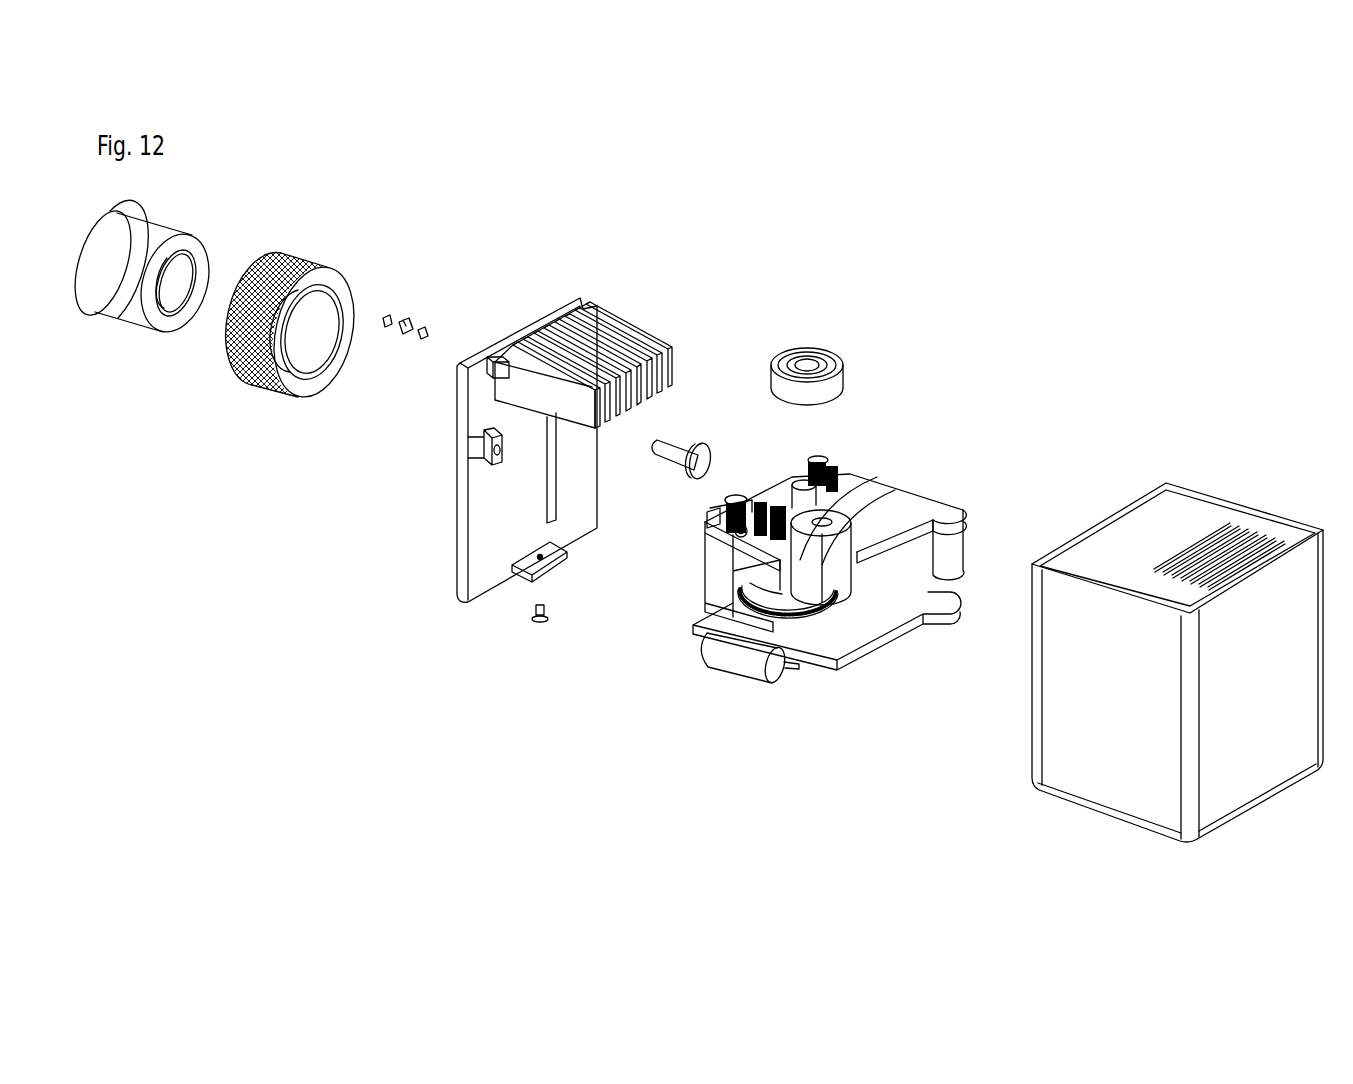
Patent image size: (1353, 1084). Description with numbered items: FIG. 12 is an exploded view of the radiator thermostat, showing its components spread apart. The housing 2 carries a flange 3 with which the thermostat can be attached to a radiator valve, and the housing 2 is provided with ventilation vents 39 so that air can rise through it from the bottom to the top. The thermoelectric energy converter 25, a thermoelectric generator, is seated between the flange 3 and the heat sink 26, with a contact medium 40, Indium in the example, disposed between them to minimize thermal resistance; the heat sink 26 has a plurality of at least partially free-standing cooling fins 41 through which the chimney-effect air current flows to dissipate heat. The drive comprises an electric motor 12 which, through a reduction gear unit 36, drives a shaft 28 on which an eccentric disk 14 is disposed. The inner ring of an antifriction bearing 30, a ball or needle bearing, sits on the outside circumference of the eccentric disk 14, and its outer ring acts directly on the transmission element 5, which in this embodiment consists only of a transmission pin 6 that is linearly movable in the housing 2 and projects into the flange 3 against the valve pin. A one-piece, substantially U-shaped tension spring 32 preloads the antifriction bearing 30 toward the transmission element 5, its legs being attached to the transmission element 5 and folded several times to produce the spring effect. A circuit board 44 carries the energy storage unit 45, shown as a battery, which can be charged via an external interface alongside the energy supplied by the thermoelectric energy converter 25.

The housing 2 is at (1177, 616).
The flange 3 is at (157, 232).
The transmission element 5 is at (707, 450).
The transmission pin 6 is at (675, 450).
The electric motor 12 is at (905, 505).
The eccentric disk 14 is at (810, 365).
The thermoelectric energy converter 25 is at (408, 322).
The heat sink 26 is at (582, 321).
The shaft 28 is at (803, 488).
The antifriction bearing 30 is at (830, 327).
The tension spring 32 is at (842, 543).
The reduction gear unit 36 is at (803, 615).
The ventilation vents 39 is at (1214, 534).
The contact medium 40 is at (388, 315).
The cooling fins 41 is at (637, 333).
The circuit board 44 is at (840, 647).
The energy storage unit 45 is at (742, 655).